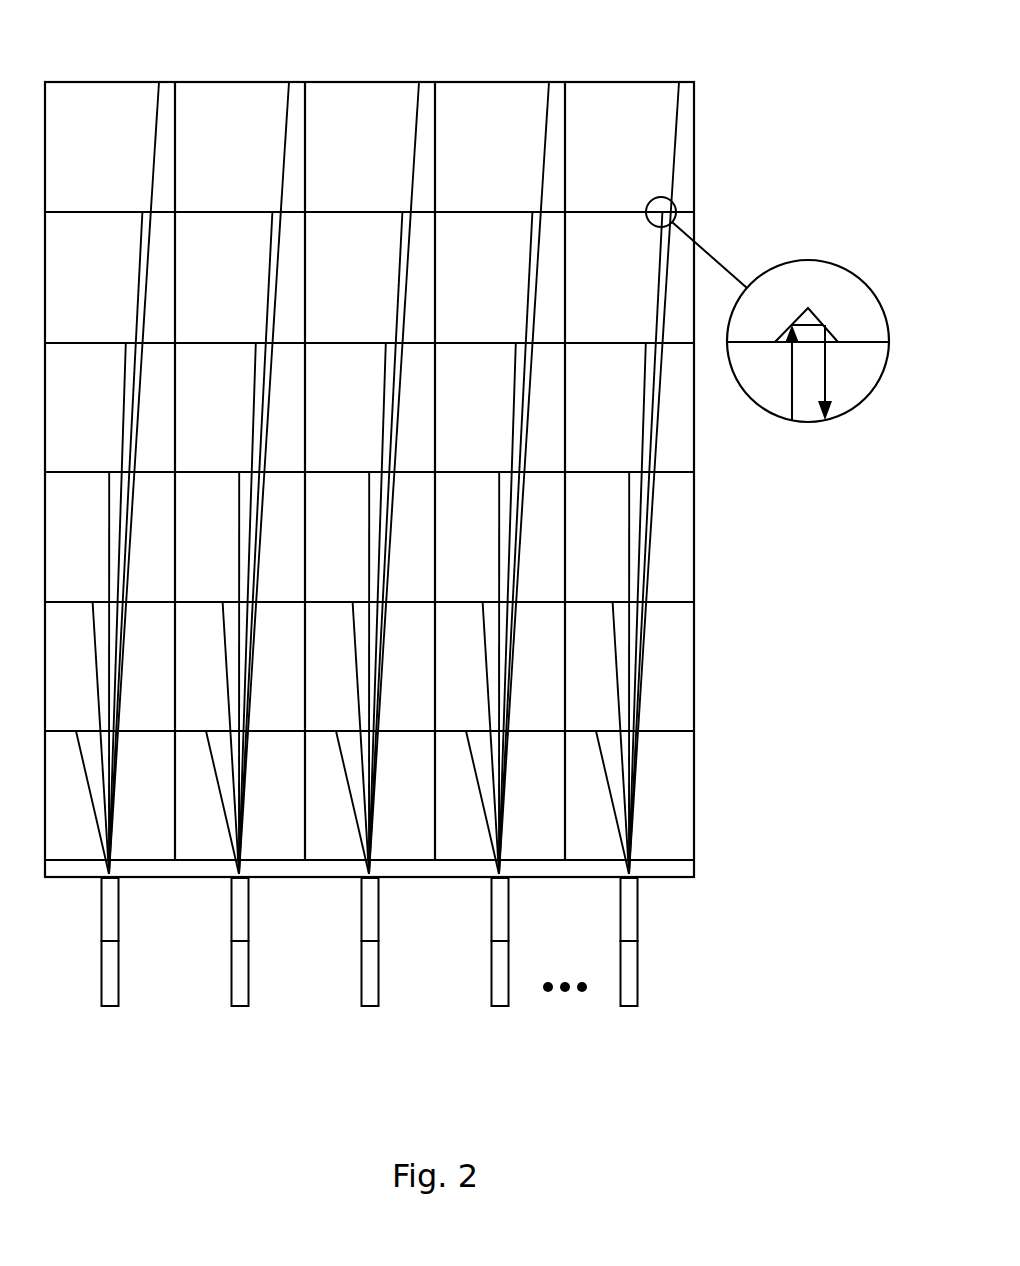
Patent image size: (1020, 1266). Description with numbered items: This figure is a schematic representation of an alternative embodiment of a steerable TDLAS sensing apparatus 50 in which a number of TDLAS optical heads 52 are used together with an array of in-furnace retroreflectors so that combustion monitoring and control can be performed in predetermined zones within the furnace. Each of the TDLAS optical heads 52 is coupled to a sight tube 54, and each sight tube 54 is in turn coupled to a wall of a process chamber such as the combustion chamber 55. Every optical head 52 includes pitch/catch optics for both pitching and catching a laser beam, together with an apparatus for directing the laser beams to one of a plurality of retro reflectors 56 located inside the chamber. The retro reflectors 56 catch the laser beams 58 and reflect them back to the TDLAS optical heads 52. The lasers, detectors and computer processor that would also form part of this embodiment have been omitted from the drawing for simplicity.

The sensing apparatus 50 is at (770, 62).
The TDLAS optical heads 52 is at (399, 996).
The sight tubes 54 is at (396, 919).
The combustion chamber 55 is at (694, 665).
The retro reflectors 56 is at (820, 315).
The laser beams 58 is at (830, 373).